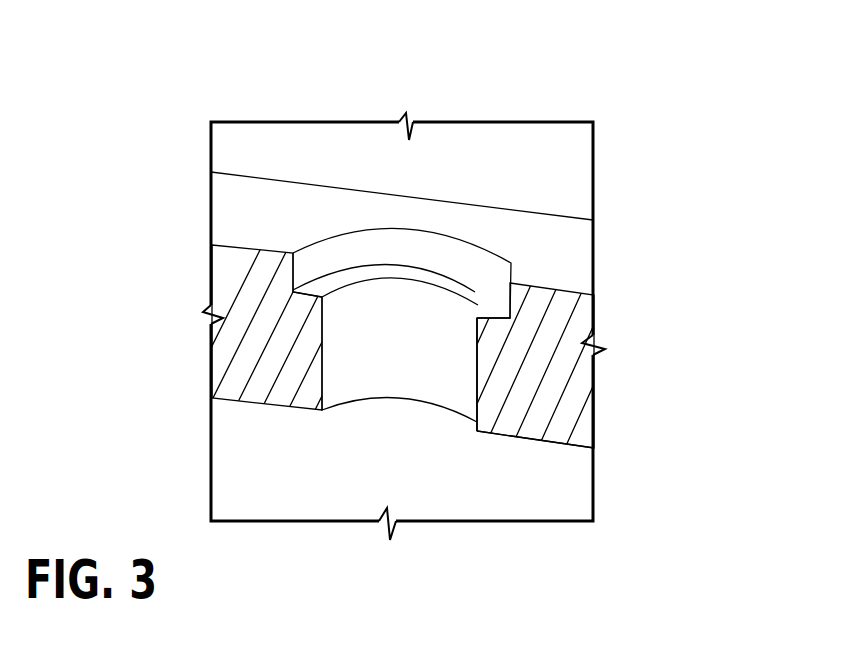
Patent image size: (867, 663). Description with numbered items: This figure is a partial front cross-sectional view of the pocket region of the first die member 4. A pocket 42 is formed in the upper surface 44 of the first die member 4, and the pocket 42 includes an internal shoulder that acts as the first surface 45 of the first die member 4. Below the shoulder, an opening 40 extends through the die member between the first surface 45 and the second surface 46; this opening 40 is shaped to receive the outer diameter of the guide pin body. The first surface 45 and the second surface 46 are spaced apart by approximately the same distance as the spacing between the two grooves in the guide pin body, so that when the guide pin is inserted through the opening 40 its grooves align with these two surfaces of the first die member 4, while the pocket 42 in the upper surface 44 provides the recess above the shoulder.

The first die member 4 is at (555, 370).
The opening 40 is at (475, 292).
The pocket 42 is at (397, 252).
The upper surface 44 is at (253, 220).
The first surface 45 is at (443, 320).
The second surface 46 is at (543, 445).